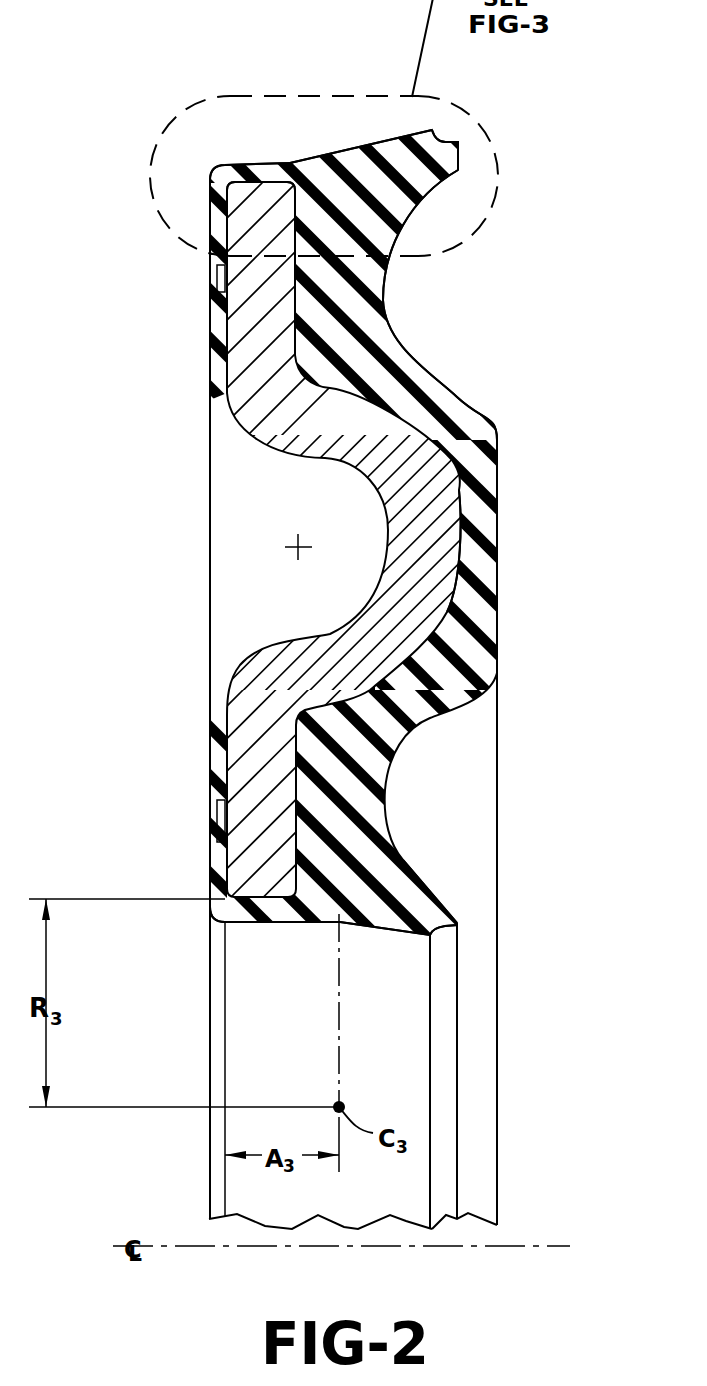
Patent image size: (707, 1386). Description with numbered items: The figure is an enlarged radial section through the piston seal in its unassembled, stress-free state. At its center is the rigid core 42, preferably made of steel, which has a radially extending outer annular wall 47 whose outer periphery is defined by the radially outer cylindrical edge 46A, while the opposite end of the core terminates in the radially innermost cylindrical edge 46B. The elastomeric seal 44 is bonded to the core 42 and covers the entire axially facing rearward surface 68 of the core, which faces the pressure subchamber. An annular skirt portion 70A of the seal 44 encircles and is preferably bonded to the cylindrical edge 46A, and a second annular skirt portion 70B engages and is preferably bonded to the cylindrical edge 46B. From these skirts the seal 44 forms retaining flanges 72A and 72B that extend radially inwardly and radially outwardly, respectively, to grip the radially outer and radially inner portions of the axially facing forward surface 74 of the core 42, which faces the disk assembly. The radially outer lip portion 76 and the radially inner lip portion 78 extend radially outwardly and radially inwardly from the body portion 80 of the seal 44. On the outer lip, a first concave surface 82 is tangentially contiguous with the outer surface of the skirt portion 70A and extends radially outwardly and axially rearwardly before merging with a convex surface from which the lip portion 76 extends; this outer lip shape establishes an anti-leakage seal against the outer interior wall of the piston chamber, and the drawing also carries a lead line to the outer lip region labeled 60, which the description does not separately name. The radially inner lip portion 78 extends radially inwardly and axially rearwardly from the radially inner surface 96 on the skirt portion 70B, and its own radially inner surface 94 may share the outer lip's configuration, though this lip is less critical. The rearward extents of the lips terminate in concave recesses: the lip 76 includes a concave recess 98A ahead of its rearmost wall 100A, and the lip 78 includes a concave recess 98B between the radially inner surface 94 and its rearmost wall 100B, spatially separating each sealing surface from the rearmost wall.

The rigid core 42 is at (245, 385).
The elastomeric seal 44 is at (473, 442).
The radially outer cylindrical edge 46A is at (253, 173).
The radially innermost cylindrical edge 46B is at (256, 904).
The radially extending outer annular wall 47 is at (266, 201).
The flange top surface 60 is at (384, 141).
The axially facing rearward surface 68 is at (459, 543).
The annular skirt portion 70A is at (257, 173).
The annular skirt portion 70B is at (277, 915).
The retaining flange 72A is at (220, 228).
The retaining flange 72B is at (220, 862).
The axially facing forward surface 74 is at (224, 336).
The radially outer lip portion 76 is at (408, 177).
The radially inner lip portion 78 is at (406, 893).
The body portion 80 is at (355, 311).
The first concave surface 82 is at (282, 165).
The radially inner surface 94 is at (377, 925).
The radially inner surface 96 is at (296, 925).
The concave recess 98A is at (440, 138).
The concave recess 98B is at (447, 940).
The rearmost wall 100A is at (460, 168).
The rearmost wall 100B is at (458, 923).